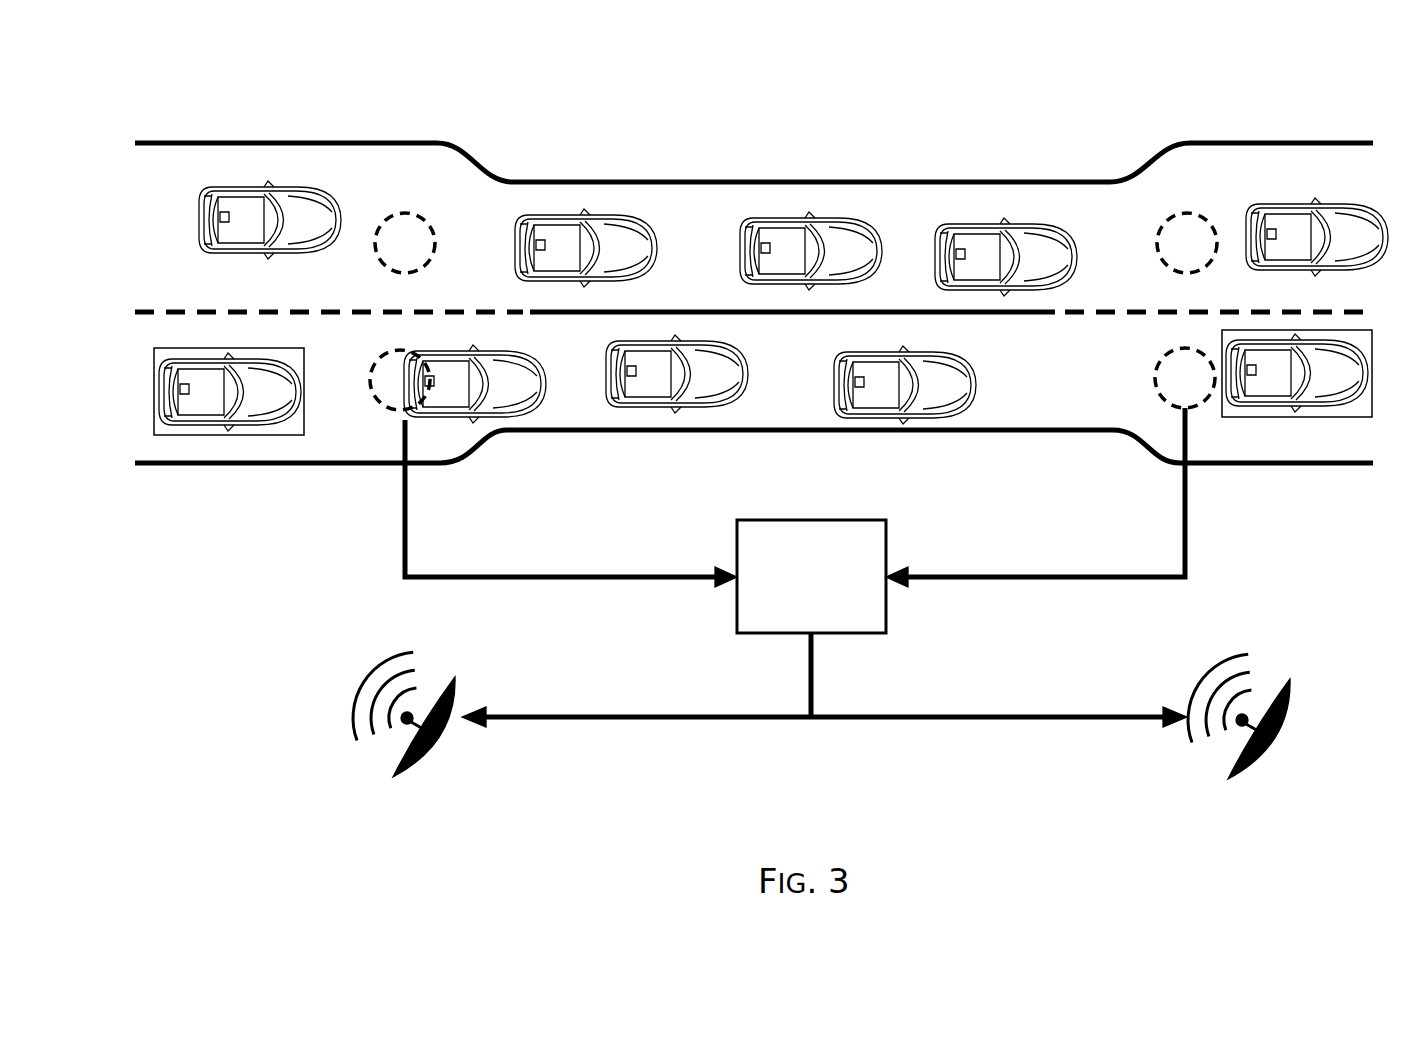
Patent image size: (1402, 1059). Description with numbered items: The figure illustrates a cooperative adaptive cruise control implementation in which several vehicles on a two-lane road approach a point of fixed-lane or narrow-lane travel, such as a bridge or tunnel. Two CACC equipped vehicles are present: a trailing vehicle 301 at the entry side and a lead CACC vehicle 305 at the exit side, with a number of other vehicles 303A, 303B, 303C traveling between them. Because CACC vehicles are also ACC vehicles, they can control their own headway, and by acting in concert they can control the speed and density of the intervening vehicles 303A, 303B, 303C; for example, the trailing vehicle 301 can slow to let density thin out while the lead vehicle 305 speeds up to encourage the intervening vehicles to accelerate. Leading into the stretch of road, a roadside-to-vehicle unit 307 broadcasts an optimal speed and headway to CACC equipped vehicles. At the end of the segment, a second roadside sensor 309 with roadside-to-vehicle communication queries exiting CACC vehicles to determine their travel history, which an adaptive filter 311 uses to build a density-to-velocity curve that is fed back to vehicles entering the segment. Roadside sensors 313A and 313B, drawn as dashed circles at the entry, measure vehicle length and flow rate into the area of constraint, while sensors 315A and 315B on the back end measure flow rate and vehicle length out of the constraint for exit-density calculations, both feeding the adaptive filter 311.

The trailing CACC vehicle 301 is at (280, 427).
The other vehicle 303A is at (527, 387).
The other vehicle 303B is at (722, 383).
The other vehicle 303C is at (905, 405).
The lead CACC vehicle 305 is at (1337, 417).
The roadside-to-vehicle unit 307 is at (352, 718).
The second roadside sensor 309 is at (1300, 722).
The adaptive filter 311 is at (886, 627).
The roadside sensor 313A is at (405, 212).
The roadside sensor 313B is at (400, 350).
The sensor 315A is at (1187, 212).
The sensor 315B is at (1203, 405).